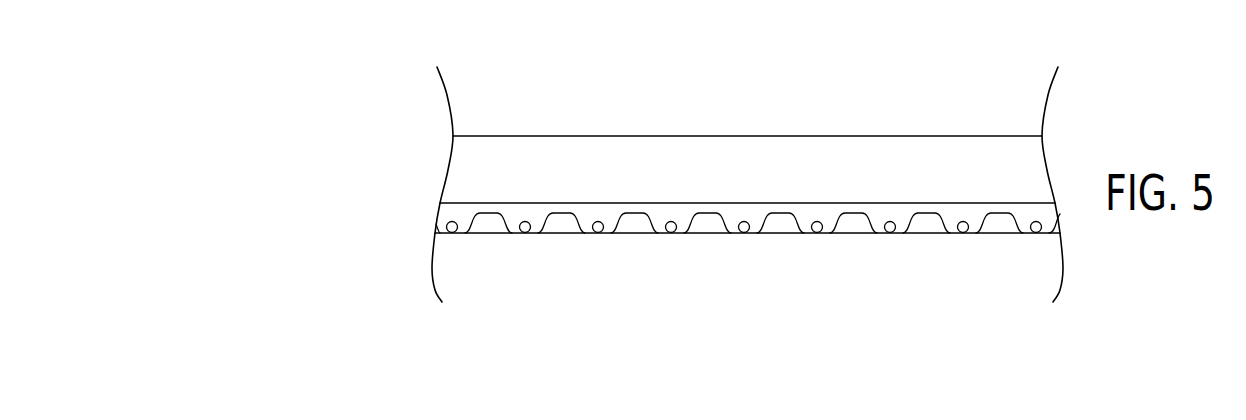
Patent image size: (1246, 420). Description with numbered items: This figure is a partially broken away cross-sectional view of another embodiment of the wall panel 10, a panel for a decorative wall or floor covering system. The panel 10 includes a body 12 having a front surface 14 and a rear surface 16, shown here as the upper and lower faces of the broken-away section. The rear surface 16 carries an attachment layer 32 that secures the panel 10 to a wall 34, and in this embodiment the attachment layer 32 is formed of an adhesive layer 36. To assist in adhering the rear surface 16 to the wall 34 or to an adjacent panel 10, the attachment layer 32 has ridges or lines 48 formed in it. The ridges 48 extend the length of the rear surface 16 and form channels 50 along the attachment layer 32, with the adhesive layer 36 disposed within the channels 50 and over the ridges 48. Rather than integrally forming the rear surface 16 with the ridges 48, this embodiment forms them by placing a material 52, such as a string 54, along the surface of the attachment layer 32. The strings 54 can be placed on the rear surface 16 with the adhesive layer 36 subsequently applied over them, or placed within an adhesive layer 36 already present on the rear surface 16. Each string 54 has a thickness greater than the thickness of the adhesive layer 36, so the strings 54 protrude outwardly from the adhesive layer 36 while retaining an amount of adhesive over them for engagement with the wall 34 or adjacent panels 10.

The wall panel 10 is at (590, 105).
The body 12 is at (905, 173).
The front surface 14 is at (677, 135).
The rear surface 16 is at (797, 200).
The attachment layer 32 is at (430, 210).
The wall 34 is at (487, 235).
The adhesive layer 36 is at (522, 213).
The ridges 48 is at (815, 237).
The channels 50 is at (560, 218).
The material 52 is at (883, 220).
The string 54 is at (890, 235).